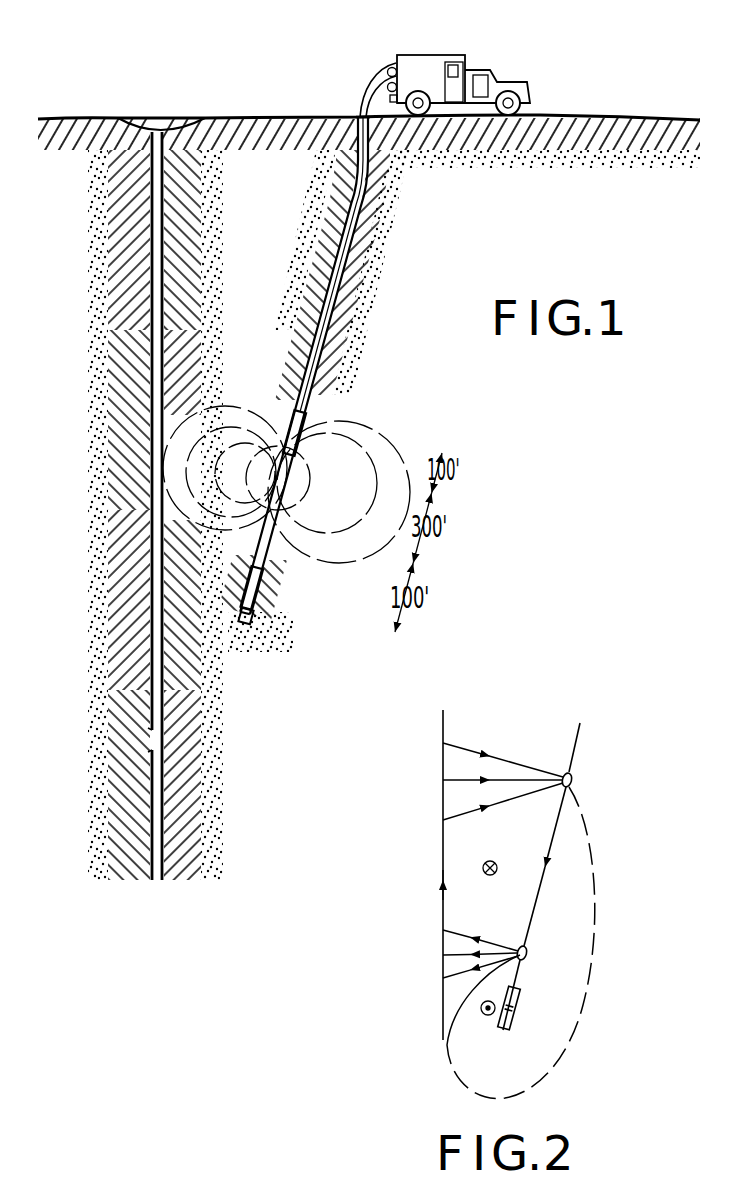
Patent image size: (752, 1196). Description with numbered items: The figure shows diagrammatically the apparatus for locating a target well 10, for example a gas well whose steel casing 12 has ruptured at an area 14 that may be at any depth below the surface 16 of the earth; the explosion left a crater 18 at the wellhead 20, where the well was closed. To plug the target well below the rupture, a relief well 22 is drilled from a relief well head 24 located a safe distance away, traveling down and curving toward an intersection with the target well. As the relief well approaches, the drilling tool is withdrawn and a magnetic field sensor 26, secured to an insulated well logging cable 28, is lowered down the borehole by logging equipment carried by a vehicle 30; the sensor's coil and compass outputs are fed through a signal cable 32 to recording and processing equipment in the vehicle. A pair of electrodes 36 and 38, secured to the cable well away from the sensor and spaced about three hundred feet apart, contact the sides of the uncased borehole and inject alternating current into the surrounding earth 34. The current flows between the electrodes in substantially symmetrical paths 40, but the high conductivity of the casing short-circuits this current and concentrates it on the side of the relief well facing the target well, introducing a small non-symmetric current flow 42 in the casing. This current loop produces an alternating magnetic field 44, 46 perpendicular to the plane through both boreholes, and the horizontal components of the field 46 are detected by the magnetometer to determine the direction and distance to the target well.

In FIG. 1, the target well 10 is at (165, 180).
In FIG. 1, the steel casing 12 is at (165, 334).
In FIG. 2, the steel casing 12 is at (442, 729).
In FIG. 1, the ruptured area 14 is at (150, 739).
In FIG. 1, the surface of the earth 16 is at (231, 117).
In FIG. 1, the crater 18 is at (146, 120).
In FIG. 1, the wellhead 20 is at (159, 131).
In FIG. 1, the relief well 22 is at (370, 235).
In FIG. 1, the relief well head 24 is at (359, 117).
In FIG. 1, the magnetic field sensor 26 is at (241, 606).
In FIG. 2, the magnetic field sensor 26 is at (508, 1030).
In FIG. 1, the well logging cable 28 is at (364, 105).
In FIG. 1, the vehicle 30 is at (448, 51).
In FIG. 1, the signal cable 32 is at (366, 100).
In FIG. 1, the earth 34 is at (254, 312).
In FIG. 1, the electrode 36 is at (305, 426).
In FIG. 2, the electrode 36 is at (572, 776).
In FIG. 1, the electrode 38 is at (265, 580).
In FIG. 2, the electrode 38 is at (528, 951).
In FIG. 1, the current paths 40 is at (262, 450).
In FIG. 2, the current paths 40 is at (524, 790).
In FIG. 2, the non-symmetric current flow 42 is at (445, 868).
In FIG. 2, the alternating magnetic field 44 is at (498, 868).
In FIG. 2, the alternating magnetic field 46 is at (487, 1015).